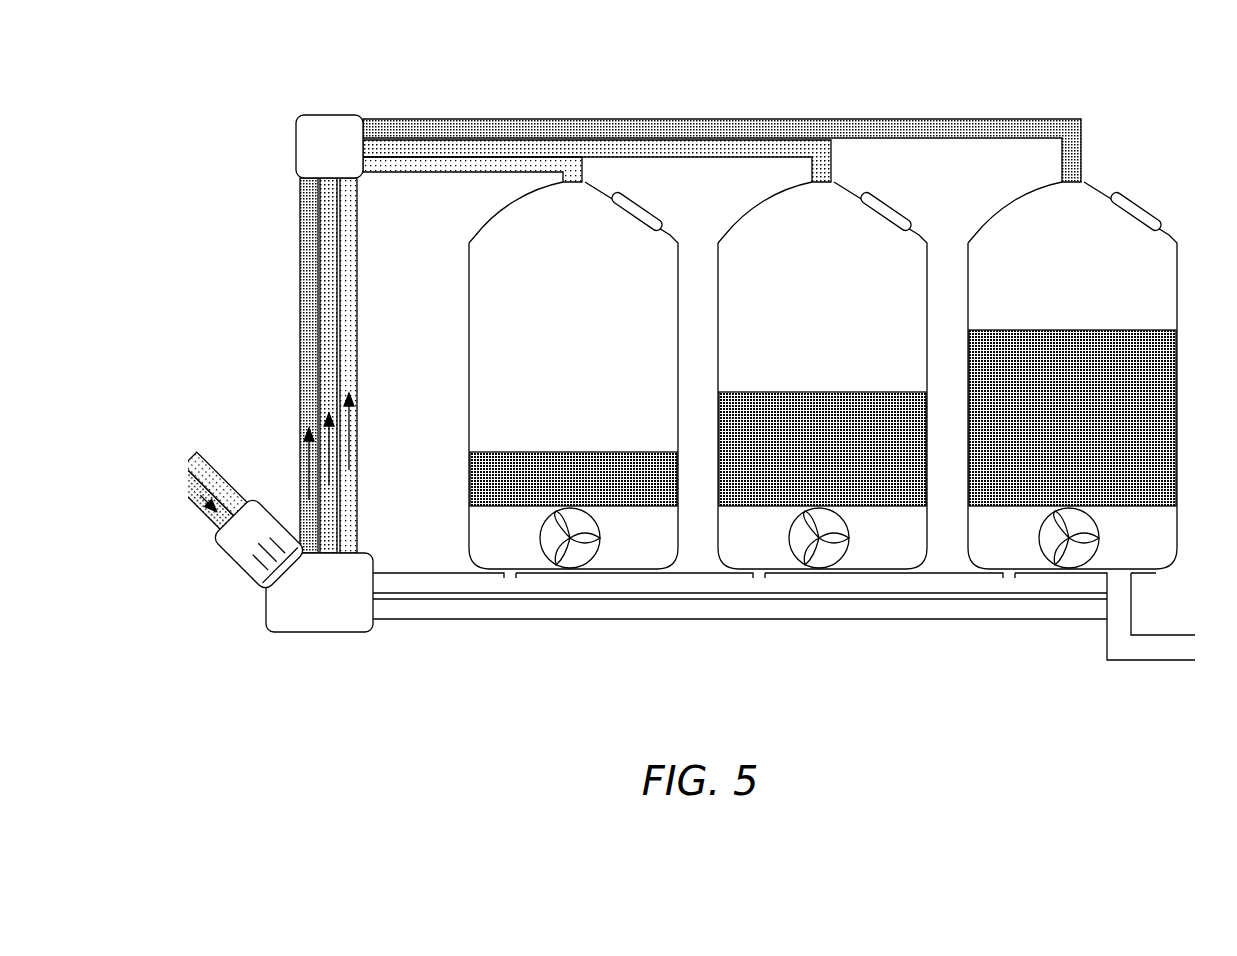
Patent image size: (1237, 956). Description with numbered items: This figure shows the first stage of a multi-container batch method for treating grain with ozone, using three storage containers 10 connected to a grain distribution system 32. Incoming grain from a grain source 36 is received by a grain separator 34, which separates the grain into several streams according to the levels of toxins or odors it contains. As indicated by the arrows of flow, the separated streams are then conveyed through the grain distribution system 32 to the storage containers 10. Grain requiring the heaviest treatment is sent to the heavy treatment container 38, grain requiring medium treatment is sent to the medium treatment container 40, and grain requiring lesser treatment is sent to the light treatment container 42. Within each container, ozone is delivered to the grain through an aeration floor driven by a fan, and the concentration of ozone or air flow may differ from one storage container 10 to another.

The storage container 10 is at (485, 248).
The grain distribution system 32 is at (312, 128).
The grain separator 34 is at (282, 625).
The grain source 36 is at (208, 477).
The heavy treatment container 38 is at (485, 404).
The medium treatment container 40 is at (788, 227).
The light treatment container 42 is at (1150, 310).